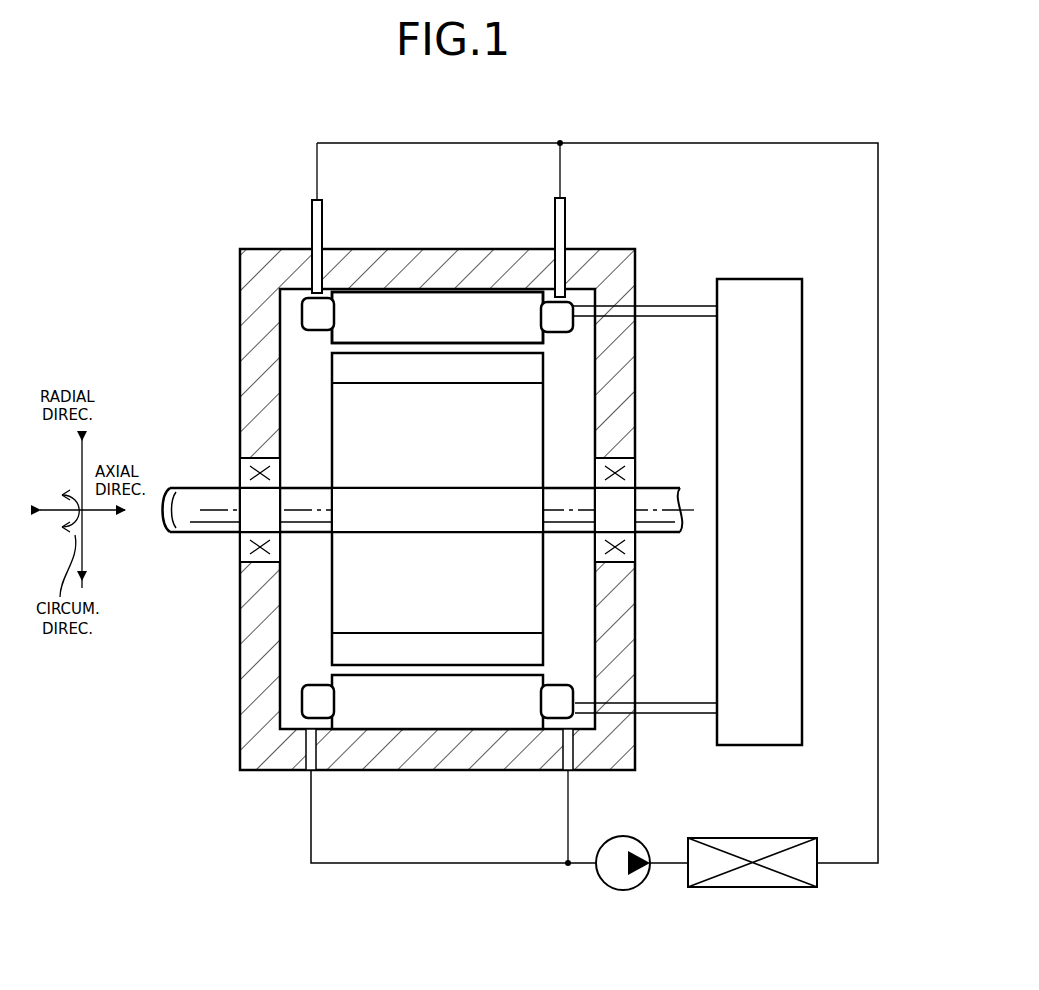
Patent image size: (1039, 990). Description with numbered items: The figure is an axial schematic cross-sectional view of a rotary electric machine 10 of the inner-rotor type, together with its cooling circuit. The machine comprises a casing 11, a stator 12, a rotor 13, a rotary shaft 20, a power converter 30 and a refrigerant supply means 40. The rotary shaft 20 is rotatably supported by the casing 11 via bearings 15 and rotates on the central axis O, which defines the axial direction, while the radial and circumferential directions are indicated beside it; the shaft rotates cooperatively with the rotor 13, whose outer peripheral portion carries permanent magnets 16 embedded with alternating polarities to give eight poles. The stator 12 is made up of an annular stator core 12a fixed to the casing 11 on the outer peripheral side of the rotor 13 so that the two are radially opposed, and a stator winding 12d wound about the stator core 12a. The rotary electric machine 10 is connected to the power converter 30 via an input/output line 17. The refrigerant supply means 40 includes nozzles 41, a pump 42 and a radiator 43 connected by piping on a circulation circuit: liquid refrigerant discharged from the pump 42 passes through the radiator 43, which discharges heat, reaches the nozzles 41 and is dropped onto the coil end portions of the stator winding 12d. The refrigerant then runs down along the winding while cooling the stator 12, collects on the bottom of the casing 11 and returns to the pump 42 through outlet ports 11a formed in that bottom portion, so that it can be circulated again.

The rotary electric machine 10 is at (228, 188).
The casing 11 is at (246, 306).
The outlet ports 11a is at (294, 745).
The stator 12 is at (408, 287).
The stator core 12a is at (365, 312).
The stator winding 12d is at (300, 312).
The rotor 13 is at (467, 408).
The bearings 15 is at (258, 452).
The permanent magnets 16 is at (438, 365).
The input/output line 17 is at (686, 308).
The rotary shaft 20 is at (198, 502).
The power converter 30 is at (803, 335).
The refrigerant supply means 40 is at (680, 140).
The nozzles 41 is at (312, 226).
The pump 42 is at (623, 890).
The radiator 43 is at (742, 888).